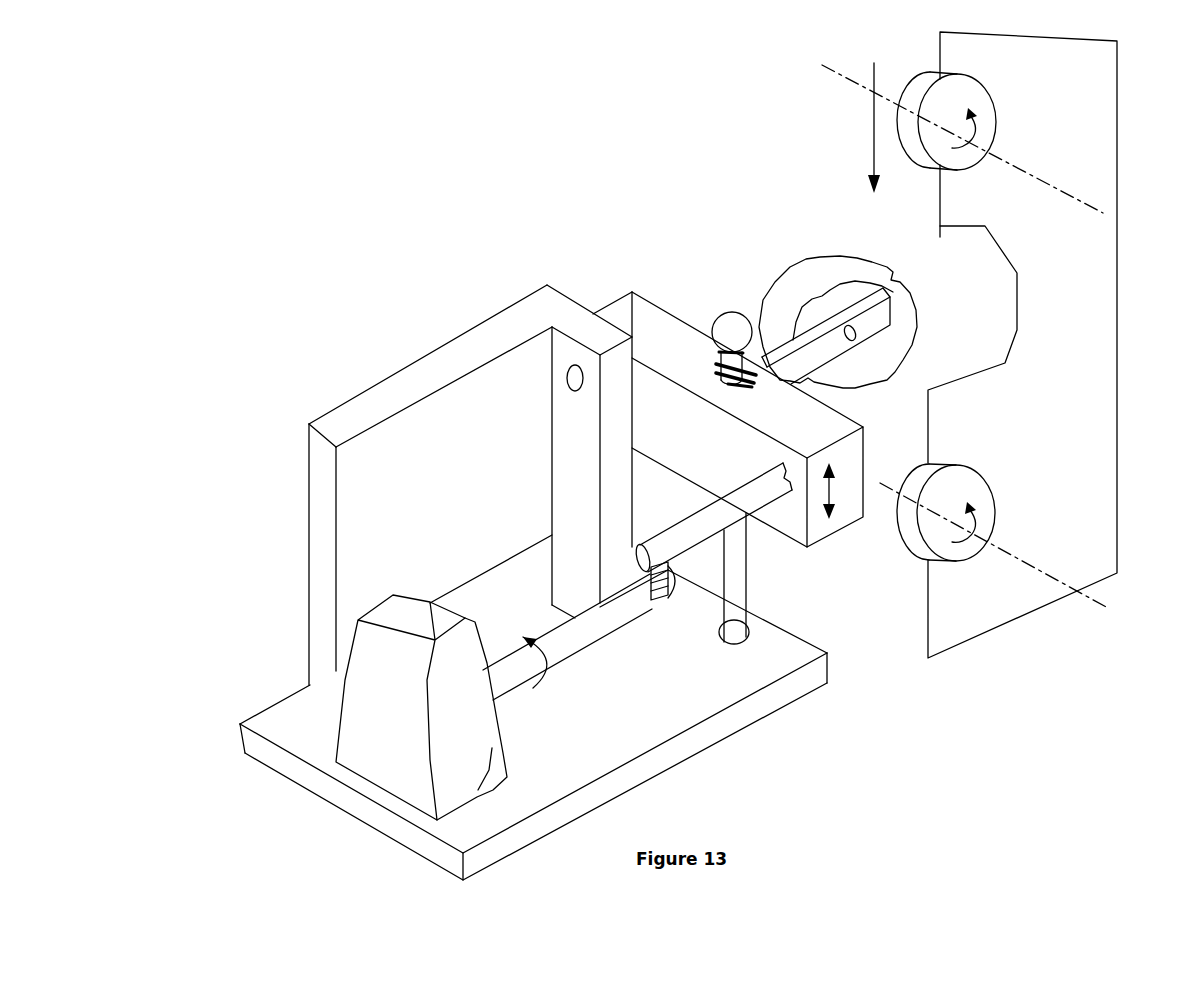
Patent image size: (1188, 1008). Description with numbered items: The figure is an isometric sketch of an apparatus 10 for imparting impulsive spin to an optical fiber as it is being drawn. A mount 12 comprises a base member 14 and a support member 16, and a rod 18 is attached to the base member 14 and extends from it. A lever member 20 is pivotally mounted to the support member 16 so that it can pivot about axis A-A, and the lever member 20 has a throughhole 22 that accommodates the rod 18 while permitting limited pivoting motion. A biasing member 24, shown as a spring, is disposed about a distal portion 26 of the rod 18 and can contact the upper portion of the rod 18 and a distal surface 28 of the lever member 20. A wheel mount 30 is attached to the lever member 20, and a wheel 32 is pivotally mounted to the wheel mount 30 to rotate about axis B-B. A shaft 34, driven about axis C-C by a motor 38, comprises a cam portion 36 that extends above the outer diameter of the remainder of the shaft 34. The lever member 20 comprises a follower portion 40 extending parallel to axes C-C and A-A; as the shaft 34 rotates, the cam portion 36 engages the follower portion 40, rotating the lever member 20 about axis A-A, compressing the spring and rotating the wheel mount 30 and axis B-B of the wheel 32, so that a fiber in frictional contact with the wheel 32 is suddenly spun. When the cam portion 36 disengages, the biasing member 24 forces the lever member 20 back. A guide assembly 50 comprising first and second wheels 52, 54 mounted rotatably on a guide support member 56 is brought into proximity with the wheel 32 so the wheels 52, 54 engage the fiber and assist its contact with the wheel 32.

The apparatus 10 is at (481, 180).
The mount 12 is at (234, 477).
The base member 14 is at (495, 852).
The support member 16 is at (525, 330).
The rod 18 is at (733, 578).
The lever member 20 is at (818, 525).
The throughhole 22 is at (733, 383).
The biasing member 24 is at (750, 384).
The distal portion 26 is at (729, 325).
The distal surface 28 is at (818, 428).
The wheel mount 30 is at (873, 318).
The wheel 32 is at (818, 277).
The shaft 34 is at (597, 632).
The cam portion 36 is at (667, 590).
The motor 38 is at (377, 683).
The follower portion 40 is at (747, 497).
The guide assembly 50 is at (1050, 678).
The first wheel 52 is at (913, 98).
The second wheel 54 is at (955, 552).
The guide support member 56 is at (1083, 429).